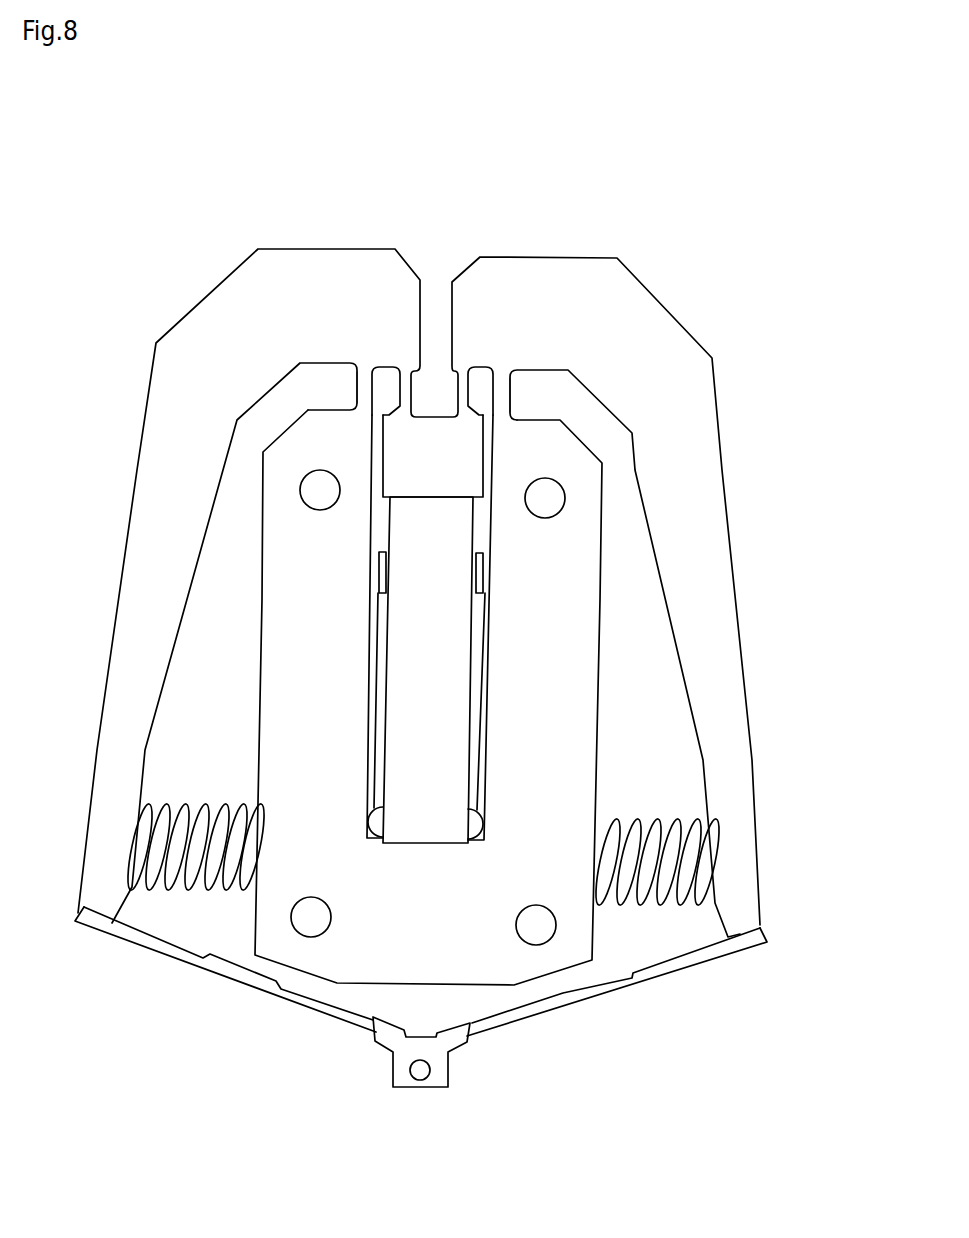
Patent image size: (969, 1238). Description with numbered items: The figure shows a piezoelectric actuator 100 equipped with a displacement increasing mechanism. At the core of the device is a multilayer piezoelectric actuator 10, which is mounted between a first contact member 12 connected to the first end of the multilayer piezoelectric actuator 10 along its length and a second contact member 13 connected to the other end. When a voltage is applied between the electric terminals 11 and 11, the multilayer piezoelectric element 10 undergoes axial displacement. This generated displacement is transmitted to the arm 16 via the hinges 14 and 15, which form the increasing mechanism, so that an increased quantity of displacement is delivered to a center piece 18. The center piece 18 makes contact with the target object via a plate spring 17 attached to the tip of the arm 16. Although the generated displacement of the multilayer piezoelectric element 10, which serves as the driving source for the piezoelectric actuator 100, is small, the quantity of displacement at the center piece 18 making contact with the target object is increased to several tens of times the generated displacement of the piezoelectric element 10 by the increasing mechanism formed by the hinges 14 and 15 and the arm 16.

The piezoelectric actuator 100 is at (174, 250).
The multilayer piezoelectric actuator 10 is at (457, 735).
The electric terminal 11 is at (377, 568).
The first contact member 12 is at (584, 652).
The second contact member 13 is at (473, 460).
The hinge 14 is at (358, 378).
The hinge 15 is at (404, 378).
The arm 16 is at (328, 249).
The plate spring 17 is at (252, 1013).
The center piece 18 is at (448, 1070).